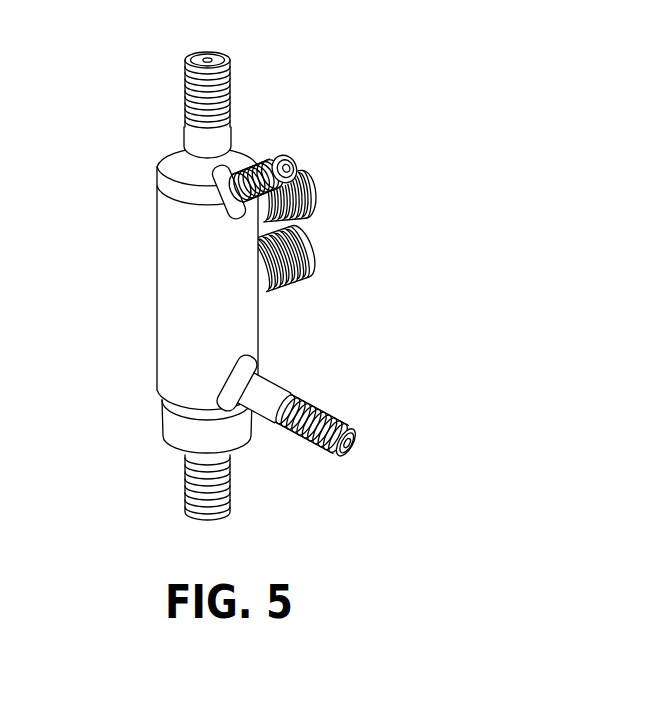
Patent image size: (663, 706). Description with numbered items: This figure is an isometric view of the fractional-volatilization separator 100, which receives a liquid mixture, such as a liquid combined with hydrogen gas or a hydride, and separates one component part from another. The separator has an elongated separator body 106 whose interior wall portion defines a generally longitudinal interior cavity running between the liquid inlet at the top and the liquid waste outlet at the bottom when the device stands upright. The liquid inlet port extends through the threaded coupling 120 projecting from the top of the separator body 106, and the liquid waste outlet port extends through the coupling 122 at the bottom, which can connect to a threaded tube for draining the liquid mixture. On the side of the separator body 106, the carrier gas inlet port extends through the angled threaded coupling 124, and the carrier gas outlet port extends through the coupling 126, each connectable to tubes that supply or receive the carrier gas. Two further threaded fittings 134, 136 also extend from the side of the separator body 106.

The fractional-volatilization separator 100 is at (402, 90).
The separator body 106 is at (155, 280).
The coupling 120 is at (185, 92).
The coupling 122 is at (185, 488).
The coupling 124 is at (333, 410).
The coupling 126 is at (268, 154).
The lower rear threaded fitting 134 is at (302, 272).
The upper rear threaded fitting 136 is at (318, 200).